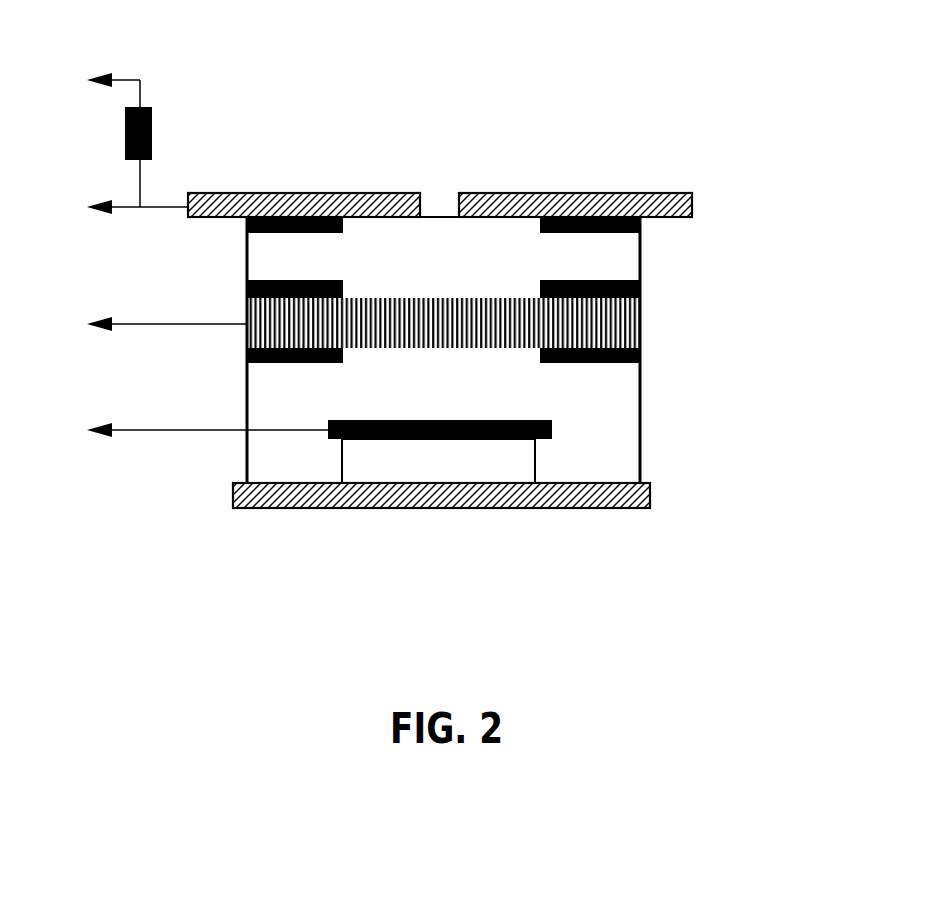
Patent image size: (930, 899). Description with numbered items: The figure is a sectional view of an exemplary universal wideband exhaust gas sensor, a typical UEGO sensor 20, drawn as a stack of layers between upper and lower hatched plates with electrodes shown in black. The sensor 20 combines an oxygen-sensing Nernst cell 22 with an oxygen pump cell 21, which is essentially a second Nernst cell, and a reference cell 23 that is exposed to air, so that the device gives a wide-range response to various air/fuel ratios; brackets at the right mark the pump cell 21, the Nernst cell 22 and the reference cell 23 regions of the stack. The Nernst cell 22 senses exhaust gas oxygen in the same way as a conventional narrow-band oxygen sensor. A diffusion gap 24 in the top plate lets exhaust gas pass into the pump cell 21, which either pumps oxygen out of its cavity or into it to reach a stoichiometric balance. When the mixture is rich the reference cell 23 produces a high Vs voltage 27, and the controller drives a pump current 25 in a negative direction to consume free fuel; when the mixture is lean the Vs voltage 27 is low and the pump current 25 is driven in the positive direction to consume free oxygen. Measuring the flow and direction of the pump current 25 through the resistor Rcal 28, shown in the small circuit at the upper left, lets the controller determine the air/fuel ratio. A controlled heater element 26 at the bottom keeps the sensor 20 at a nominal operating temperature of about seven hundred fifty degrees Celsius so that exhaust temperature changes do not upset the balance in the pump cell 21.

The UEGO sensor 20 is at (600, 107).
The oxygen pump cell 21 is at (665, 315).
The Nernst cell 22 is at (665, 428).
The reference cell 23 is at (665, 493).
The diffusion gap 24 is at (435, 207).
The pump current 25 is at (119, 220).
The heater element 26 is at (548, 508).
The Vs voltage 27 is at (189, 442).
The resistor Rcal 28 is at (150, 128).